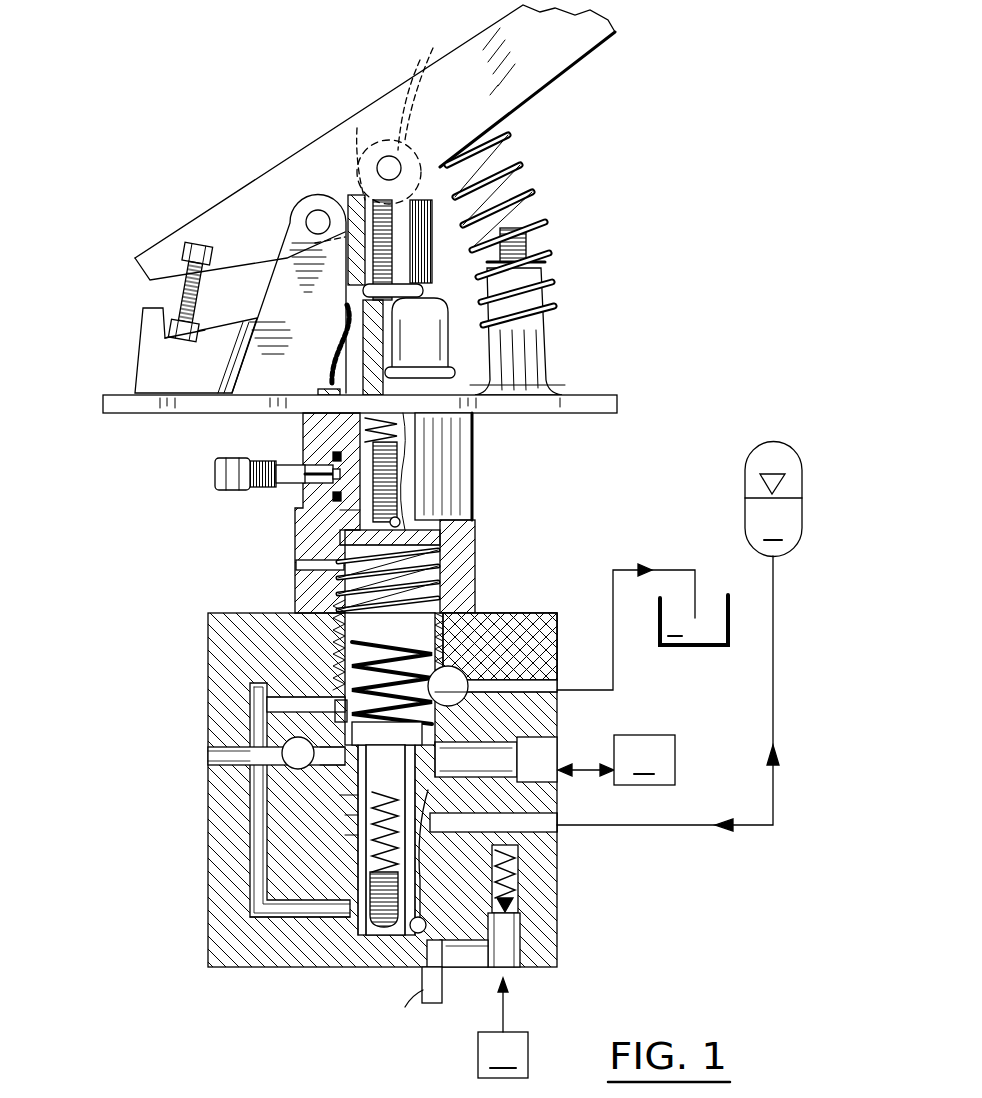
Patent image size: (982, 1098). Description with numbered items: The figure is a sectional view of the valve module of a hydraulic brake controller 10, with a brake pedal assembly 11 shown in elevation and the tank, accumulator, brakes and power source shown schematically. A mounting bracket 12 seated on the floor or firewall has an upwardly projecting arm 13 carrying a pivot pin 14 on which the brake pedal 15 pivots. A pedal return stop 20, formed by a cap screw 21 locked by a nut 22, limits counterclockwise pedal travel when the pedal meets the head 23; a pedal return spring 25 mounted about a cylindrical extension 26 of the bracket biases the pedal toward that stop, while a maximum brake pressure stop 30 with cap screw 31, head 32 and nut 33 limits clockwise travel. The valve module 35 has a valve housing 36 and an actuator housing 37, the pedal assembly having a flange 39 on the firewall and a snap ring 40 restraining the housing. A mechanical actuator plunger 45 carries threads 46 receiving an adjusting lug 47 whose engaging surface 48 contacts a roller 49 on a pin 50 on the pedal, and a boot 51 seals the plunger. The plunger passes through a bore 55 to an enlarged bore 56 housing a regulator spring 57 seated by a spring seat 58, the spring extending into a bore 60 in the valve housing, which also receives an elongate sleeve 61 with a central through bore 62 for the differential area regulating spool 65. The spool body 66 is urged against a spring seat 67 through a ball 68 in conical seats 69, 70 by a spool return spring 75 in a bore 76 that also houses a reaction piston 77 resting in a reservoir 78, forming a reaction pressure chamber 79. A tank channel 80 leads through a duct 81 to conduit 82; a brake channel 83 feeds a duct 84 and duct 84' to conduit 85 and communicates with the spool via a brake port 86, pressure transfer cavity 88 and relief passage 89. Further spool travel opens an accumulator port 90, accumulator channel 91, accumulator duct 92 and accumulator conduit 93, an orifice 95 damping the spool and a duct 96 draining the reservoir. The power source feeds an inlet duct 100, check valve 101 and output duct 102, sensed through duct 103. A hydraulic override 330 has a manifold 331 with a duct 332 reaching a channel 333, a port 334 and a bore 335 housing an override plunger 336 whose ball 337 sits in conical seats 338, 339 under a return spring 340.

The hydraulic brake controller 10 is at (436, 541).
The brake pedal assembly 11 is at (350, 201).
The mounting bracket 12 is at (168, 382).
The arm 13 is at (280, 298).
The pivot pin 14 is at (305, 210).
The brake pedal 15 is at (536, 56).
The pedal return stop 20 is at (171, 294).
The cap screw 21 is at (192, 333).
The nut 22 is at (178, 328).
The head 23 is at (182, 290).
The pedal return spring 25 is at (517, 163).
The cylindrical extension 26 is at (498, 310).
The maximum brake pressure stop 30 is at (523, 251).
The cap screw 31 is at (502, 256).
The head 32 is at (517, 222).
The nut 33 is at (545, 266).
The valve module 35 is at (436, 745).
The valve housing 36 is at (215, 637).
The actuator housing 37 is at (433, 472).
The flange 39 is at (117, 403).
The snap ring 40 is at (333, 380).
The mechanical actuator plunger 45 is at (373, 300).
The threads 46 is at (418, 188).
The adjusting lug 47 is at (353, 220).
The engaging surface 48 is at (359, 125).
The roller 49 is at (425, 81).
The pin 50 is at (389, 165).
The boot 51 is at (394, 338).
The bore 55 is at (348, 518).
The enlarged bore 56 is at (343, 542).
The regulator spring 57 is at (375, 652).
The spring seat 58 is at (455, 572).
The bore 60 is at (392, 671).
The elongate sleeve 61 is at (350, 912).
The central through bore 62 is at (290, 746).
The differential area regulating spool 65 is at (355, 713).
The body 66 is at (387, 828).
The spring seat 67 is at (547, 712).
The ball 68 is at (345, 702).
The conical seat 69 is at (340, 672).
The conical seat 70 is at (423, 725).
The spool return spring 75 is at (350, 890).
The bore 76 is at (367, 837).
The reaction piston 77 is at (380, 920).
The reservoir 78 is at (362, 912).
The reaction pressure chamber 79 is at (367, 822).
The tank channel 80 is at (493, 615).
The duct 81 is at (525, 650).
The conduit 82 is at (675, 568).
The brake channel 83 is at (427, 767).
The duct 84 is at (561, 769).
The duct 84' is at (249, 733).
The conduit 85 is at (600, 735).
The brake port 86 is at (350, 773).
The pressure transfer cavity 88 is at (430, 807).
The relief passage 89 is at (417, 740).
The accumulator port 90 is at (367, 810).
The accumulator channel 91 is at (453, 980).
The accumulator duct 92 is at (557, 820).
The accumulator conduit 93 is at (743, 827).
The orifice 95 is at (340, 797).
The duct 96 is at (273, 913).
The inlet duct 100 is at (512, 935).
The check valve 101 is at (512, 900).
The output duct 102 is at (512, 835).
The duct 103 is at (463, 942).
The hydraulic override 330 is at (241, 483).
The manifold 331 is at (250, 473).
The duct 332 is at (303, 497).
The channel 333 is at (305, 398).
The port 334 is at (300, 453).
The bore 335 is at (450, 383).
The override plunger 336 is at (393, 455).
The ball 337 is at (340, 565).
The conical seat 338 is at (390, 523).
The conical seat 339 is at (403, 543).
The return spring 340 is at (387, 440).